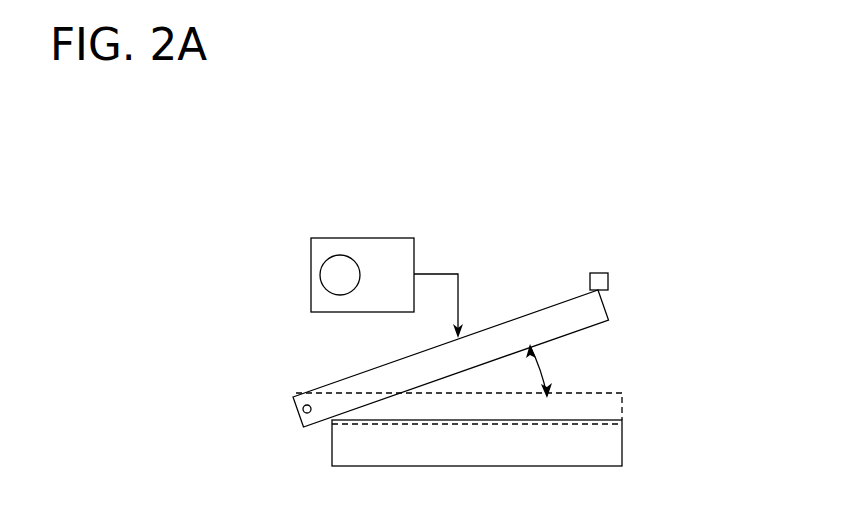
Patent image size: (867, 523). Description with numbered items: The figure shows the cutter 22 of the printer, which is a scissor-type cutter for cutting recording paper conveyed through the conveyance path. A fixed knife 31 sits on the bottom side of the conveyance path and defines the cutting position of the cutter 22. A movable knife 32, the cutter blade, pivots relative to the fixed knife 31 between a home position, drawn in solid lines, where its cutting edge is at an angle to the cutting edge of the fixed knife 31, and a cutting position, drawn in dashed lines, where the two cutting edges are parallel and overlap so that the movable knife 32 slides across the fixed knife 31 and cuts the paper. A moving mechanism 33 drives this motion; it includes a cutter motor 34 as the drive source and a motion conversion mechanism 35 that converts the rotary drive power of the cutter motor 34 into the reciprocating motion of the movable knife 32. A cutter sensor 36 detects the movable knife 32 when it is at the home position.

The cutter 22 is at (685, 220).
The fixed knife 31 is at (544, 455).
The movable knife 32 is at (575, 315).
The moving mechanism 33 is at (302, 218).
The cutter motor 34 is at (342, 252).
The motion conversion mechanism 35 is at (383, 242).
The cutter sensor 36 is at (608, 280).